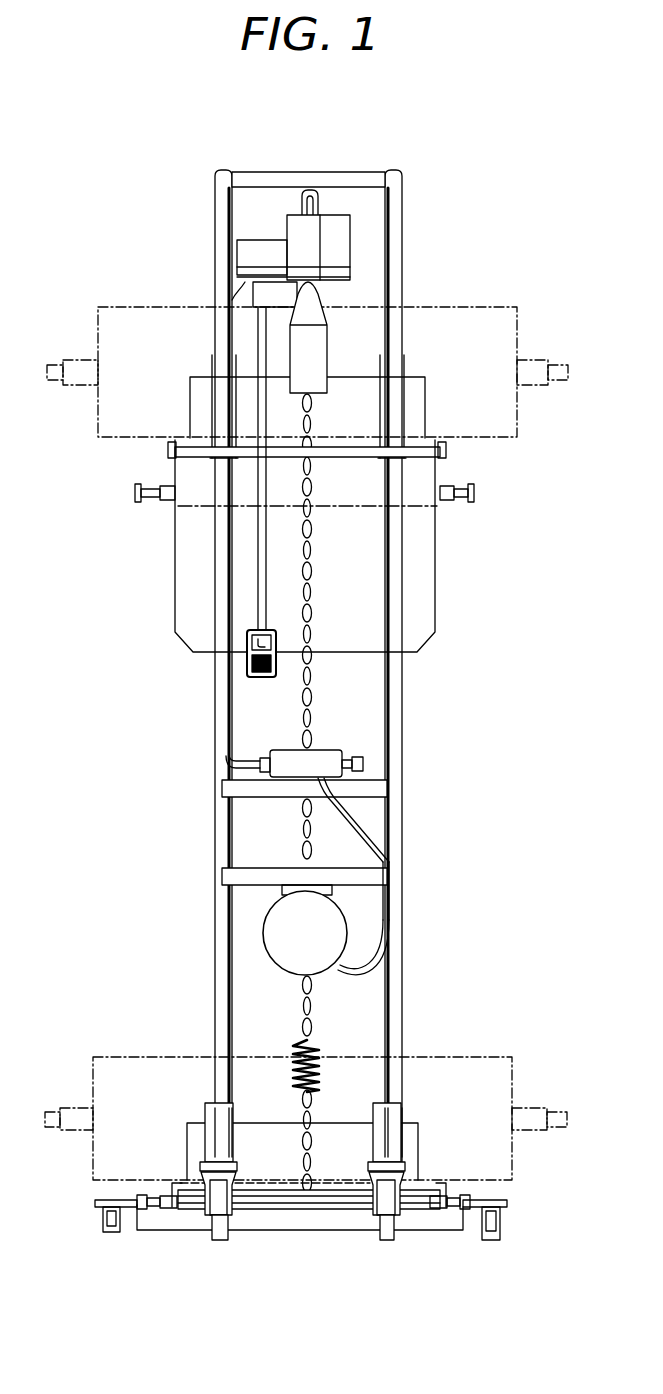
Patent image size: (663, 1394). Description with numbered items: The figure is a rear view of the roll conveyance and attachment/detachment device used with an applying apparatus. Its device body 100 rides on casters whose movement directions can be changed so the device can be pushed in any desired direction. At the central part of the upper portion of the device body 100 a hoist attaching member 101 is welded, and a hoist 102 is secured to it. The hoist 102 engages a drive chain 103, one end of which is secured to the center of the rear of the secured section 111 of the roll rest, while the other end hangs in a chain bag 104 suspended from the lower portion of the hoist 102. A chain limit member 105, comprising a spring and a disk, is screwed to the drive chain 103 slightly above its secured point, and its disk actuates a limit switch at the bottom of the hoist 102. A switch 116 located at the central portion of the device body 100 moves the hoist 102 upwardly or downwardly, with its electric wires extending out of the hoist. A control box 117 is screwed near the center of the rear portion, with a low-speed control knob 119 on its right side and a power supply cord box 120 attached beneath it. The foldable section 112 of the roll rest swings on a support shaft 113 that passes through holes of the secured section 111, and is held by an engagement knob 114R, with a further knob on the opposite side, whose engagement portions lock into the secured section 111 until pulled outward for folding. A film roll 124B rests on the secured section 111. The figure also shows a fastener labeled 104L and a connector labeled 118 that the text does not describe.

The device body 100 is at (396, 811).
The hoist attaching member 101 is at (322, 204).
The hoist 102 is at (348, 252).
The drive chain 103 is at (310, 587).
The chain bag 104 is at (317, 347).
The left fixing bolt 104L is at (135, 495).
The chain limit member 105 is at (312, 1041).
The secured section of the roll rest 111 is at (283, 1188).
The foldable section of the roll rest 112 is at (437, 626).
The support shaft 113 is at (446, 452).
The engagement knob 114R is at (476, 494).
The switch 116 is at (247, 660).
The control box 117 is at (326, 748).
The left connector 118 is at (288, 748).
The low-speed control knob 119 is at (363, 763).
The power supply cord box 120 is at (345, 918).
The film roll 124B is at (520, 335).